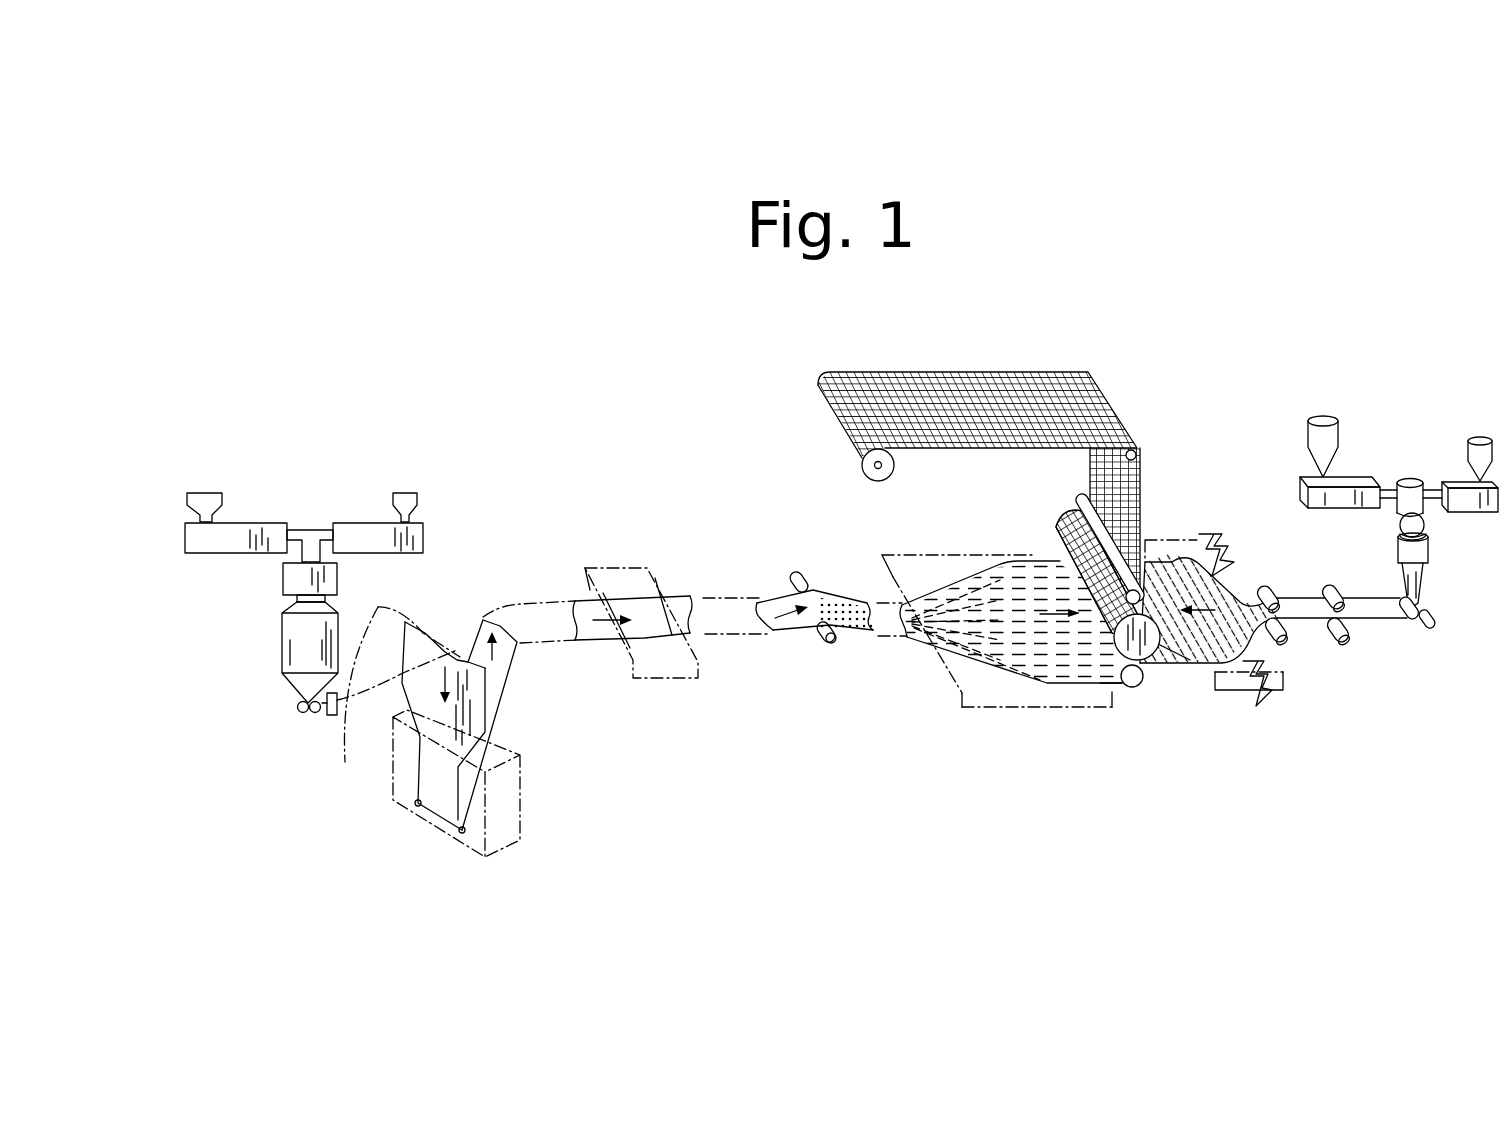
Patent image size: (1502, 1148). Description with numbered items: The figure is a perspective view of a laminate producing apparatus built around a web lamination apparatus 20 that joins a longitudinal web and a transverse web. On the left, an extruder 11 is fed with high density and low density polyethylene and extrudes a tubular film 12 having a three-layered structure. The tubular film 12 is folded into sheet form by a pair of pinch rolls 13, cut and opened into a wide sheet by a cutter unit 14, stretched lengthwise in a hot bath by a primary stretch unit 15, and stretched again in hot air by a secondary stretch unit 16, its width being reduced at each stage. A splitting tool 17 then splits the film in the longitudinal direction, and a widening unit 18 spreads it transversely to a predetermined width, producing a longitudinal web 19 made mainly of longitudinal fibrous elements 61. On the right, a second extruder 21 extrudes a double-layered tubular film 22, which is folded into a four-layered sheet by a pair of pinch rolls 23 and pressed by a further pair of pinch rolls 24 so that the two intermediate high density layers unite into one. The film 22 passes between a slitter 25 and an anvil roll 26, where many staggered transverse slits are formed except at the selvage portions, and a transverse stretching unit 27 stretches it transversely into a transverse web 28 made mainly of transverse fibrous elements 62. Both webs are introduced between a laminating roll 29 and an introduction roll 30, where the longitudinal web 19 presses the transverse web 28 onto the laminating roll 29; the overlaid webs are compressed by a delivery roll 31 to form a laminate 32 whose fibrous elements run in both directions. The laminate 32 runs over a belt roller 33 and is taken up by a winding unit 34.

The extruder 11 is at (306, 523).
The tubular film 12 is at (283, 665).
The pair of pinch rolls 13 is at (303, 712).
The cutter unit 14 is at (330, 713).
The primary stretch unit 15 is at (522, 772).
The secondary stretch unit 16 is at (678, 666).
The splitting tool 17 is at (803, 577).
The widening unit 18 is at (970, 703).
The longitudinal web 19 is at (1118, 686).
The web lamination apparatus 20 is at (1040, 513).
The extruder 21 is at (1417, 480).
The tubular film 22 is at (1423, 570).
The pair of pinch rolls 23 is at (1428, 628).
The pair of pinch rolls 24 is at (1352, 637).
The slitter 25 is at (1268, 590).
The anvil roll 26 is at (1280, 642).
The transverse stretching unit 27 is at (1228, 690).
The transverse web 28 is at (1175, 653).
The laminating roll 29 is at (1143, 655).
The introduction roll 30 is at (1135, 688).
The delivery roll 31 is at (1082, 502).
The laminate 32 is at (1050, 373).
The belt roller 33 is at (1138, 455).
The winding unit 34 is at (885, 482).
The longitudinal fibrous elements 61 is at (1070, 642).
The transverse fibrous elements 62 is at (1192, 636).